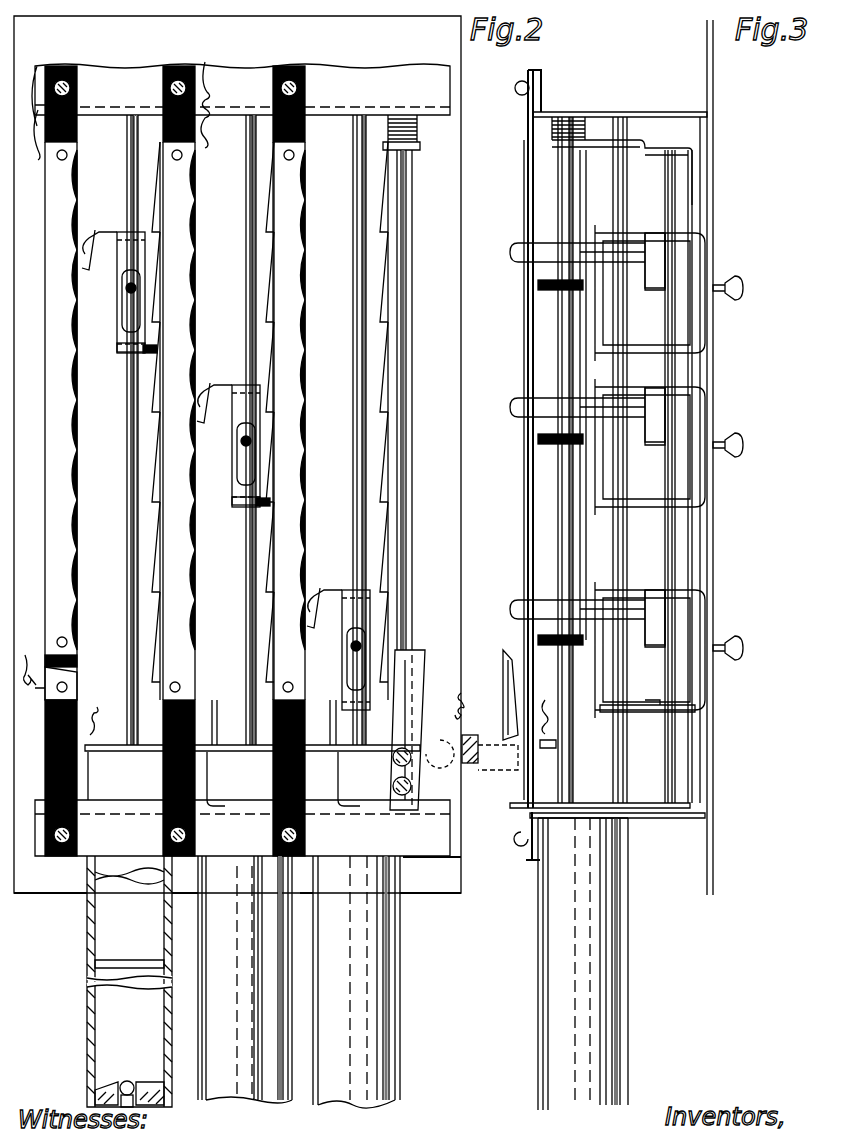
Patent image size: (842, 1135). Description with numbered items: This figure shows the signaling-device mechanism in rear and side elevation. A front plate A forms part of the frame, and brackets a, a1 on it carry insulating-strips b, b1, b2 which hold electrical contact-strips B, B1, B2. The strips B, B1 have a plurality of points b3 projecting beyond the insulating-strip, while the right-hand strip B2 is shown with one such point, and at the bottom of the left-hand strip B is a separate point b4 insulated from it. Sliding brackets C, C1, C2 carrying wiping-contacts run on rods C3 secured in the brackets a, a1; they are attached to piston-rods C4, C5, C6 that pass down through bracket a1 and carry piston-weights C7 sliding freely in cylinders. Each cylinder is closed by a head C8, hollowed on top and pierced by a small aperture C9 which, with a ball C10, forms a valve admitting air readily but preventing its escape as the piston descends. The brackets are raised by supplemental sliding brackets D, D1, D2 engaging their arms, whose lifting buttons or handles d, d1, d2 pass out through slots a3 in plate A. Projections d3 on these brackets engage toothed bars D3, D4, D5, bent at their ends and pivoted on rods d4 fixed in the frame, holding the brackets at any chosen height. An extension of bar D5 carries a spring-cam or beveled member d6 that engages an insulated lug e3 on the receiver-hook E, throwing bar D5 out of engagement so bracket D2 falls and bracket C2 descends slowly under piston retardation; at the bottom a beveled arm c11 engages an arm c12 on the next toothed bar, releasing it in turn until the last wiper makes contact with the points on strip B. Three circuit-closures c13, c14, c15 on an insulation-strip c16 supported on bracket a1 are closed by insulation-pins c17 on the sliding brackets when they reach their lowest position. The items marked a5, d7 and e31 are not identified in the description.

In FIG. 3, the bracket a is at (648, 110).
In FIG. 2, the bracket a1 is at (445, 912).
In FIG. 3, the bracket a1 is at (697, 822).
In FIG. 3, the slot a3 is at (705, 730).
In FIG. 2, the spring coil a5 is at (417, 135).
In FIG. 3, the spring coil a5 is at (555, 118).
In FIG. 2, the insulating-strip b is at (45, 104).
In FIG. 2, the insulating-strip b1 is at (165, 86).
In FIG. 2, the insulating-strip b2 is at (276, 84).
In FIG. 3, the insulating-strip b2 is at (526, 125).
In FIG. 2, the point b3 is at (80, 183).
In FIG. 3, the point b3 is at (527, 645).
In FIG. 2, the separate point b4 is at (70, 687).
In FIG. 2, the electrical contact-strip B is at (50, 205).
In FIG. 2, the electrical contact-strip B1 is at (179, 499).
In FIG. 2, the electrical contact-strip B2 is at (289, 499).
In FIG. 3, the electrical contact-strip B2 is at (528, 157).
In FIG. 2, the front plate A is at (433, 284).
In FIG. 3, the front plate A is at (728, 372).
In FIG. 2, the sliding bracket C is at (98, 245).
In FIG. 3, the sliding bracket C is at (512, 248).
In FIG. 2, the sliding bracket C1 is at (212, 398).
In FIG. 3, the sliding bracket C1 is at (512, 402).
In FIG. 2, the sliding bracket C2 is at (318, 588).
In FIG. 3, the sliding bracket C2 is at (512, 600).
In FIG. 2, the cylinder C3 is at (127, 138).
In FIG. 2, the cylinder C4 is at (133, 878).
In FIG. 3, the cylinder C4 is at (582, 335).
In FIG. 2, the cylinder C5 is at (388, 990).
In FIG. 2, the rod / tube C6 is at (350, 1100).
In FIG. 3, the rod / tube C6 is at (582, 766).
In FIG. 2, the piston-weight C7 is at (105, 952).
In FIG. 2, the head C8 is at (105, 1092).
In FIG. 2, the aperture C9 is at (132, 1104).
In FIG. 2, the ball C10 is at (130, 1082).
In FIG. 2, the beveled arm c11 is at (126, 288).
In FIG. 3, the beveled arm c11 is at (648, 278).
In FIG. 2, the arm c12 is at (330, 708).
In FIG. 3, the arm c12 is at (650, 700).
In FIG. 2, the circuit-closure c13 is at (122, 746).
In FIG. 2, the circuit-closure c14 is at (238, 746).
In FIG. 2, the circuit-closure c15 is at (332, 746).
In FIG. 2, the insulation-strip c16 is at (228, 760).
In FIG. 2, the insulation-pin c17 is at (343, 655).
In FIG. 3, the insulation-pin c17 is at (538, 286).
In FIG. 2, the supplemental sliding bracket D is at (152, 343).
In FIG. 3, the supplemental sliding bracket D is at (706, 255).
In FIG. 2, the supplemental sliding bracket D1 is at (232, 500).
In FIG. 3, the supplemental sliding bracket D1 is at (706, 482).
In FIG. 3, the supplemental sliding bracket D2 is at (712, 612).
In FIG. 2, the toothed bar D3 is at (152, 540).
In FIG. 2, the toothed bar D4 is at (266, 642).
In FIG. 2, the toothed bar D5 is at (380, 478).
In FIG. 3, the toothed bar D5 is at (690, 560).
In FIG. 3, the lifting button or handle d is at (744, 288).
In FIG. 3, the lifting button or handle d1 is at (744, 446).
In FIG. 3, the lifting button or handle d2 is at (744, 649).
In FIG. 2, the projection d3 is at (158, 350).
In FIG. 2, the rod d4 is at (412, 560).
In FIG. 3, the rod d4 is at (567, 511).
In FIG. 2, the spring-cam or beveled member d6 is at (422, 662).
In FIG. 2, the arm d7 is at (385, 746).
In FIG. 2, the receiver-hook E is at (486, 731).
In FIG. 2, the insulated lug e3 is at (447, 740).
In FIG. 2, the latch pin e31 is at (483, 773).